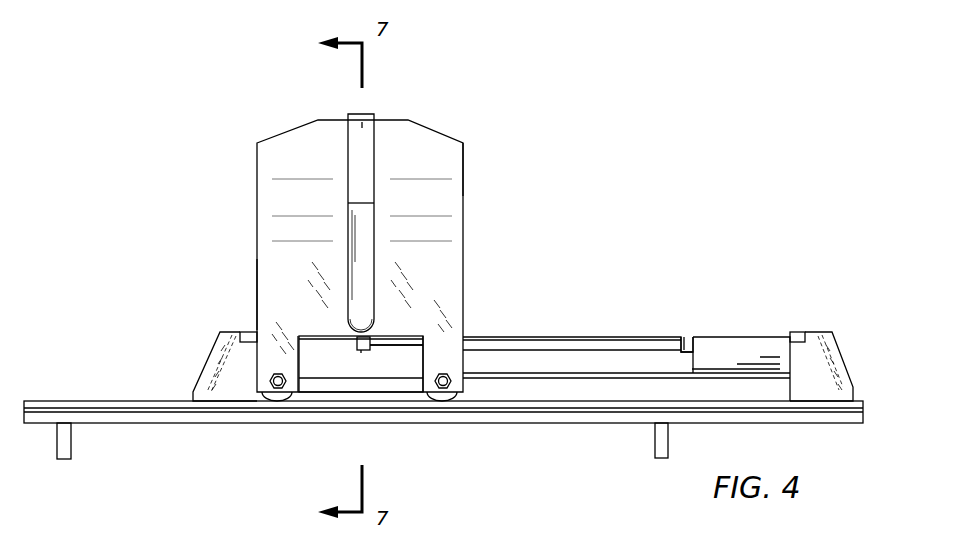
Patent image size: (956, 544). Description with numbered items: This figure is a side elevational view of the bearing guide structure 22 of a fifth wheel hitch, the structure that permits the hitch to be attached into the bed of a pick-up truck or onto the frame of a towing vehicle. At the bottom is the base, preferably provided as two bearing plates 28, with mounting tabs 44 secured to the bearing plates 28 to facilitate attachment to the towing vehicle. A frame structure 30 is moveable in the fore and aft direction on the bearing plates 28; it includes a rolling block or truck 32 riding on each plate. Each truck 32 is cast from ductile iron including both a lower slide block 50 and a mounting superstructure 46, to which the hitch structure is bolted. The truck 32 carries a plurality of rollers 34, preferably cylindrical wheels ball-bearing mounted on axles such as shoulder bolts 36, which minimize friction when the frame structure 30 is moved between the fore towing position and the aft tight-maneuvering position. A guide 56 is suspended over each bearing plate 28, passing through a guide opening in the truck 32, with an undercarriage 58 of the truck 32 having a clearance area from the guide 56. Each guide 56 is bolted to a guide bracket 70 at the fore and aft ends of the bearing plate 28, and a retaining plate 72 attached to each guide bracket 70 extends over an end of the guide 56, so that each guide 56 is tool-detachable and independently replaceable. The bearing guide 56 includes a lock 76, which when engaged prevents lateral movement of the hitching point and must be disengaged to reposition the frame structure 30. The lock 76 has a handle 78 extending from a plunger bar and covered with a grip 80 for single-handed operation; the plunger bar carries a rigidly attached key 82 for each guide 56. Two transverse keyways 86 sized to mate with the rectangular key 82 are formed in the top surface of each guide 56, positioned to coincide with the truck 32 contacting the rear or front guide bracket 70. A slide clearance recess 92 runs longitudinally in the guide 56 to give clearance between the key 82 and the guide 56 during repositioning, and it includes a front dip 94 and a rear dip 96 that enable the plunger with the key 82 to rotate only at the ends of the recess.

The bearing guide structure 22 is at (596, 163).
The bearing plates 28 is at (578, 424).
The frame structure 30 is at (510, 251).
The truck 32 is at (262, 259).
The rollers 34 is at (278, 398).
The shoulder bolts 36 is at (445, 372).
The mounting tabs 44 is at (72, 433).
The mounting superstructure 46 is at (463, 196).
The lower slide block 50 is at (277, 312).
The guide 56 is at (715, 340).
The undercarriage 58 is at (323, 336).
The guide bracket 70 is at (225, 328).
The retaining plate 72 is at (797, 332).
The lock 76 is at (379, 368).
The handle 78 is at (370, 237).
The grip 80 is at (353, 115).
The key 82 is at (364, 352).
The keyways 86 is at (686, 340).
The slide clearance recess 92 is at (543, 350).
The front dip 94 is at (684, 340).
The rear dip 96 is at (361, 351).